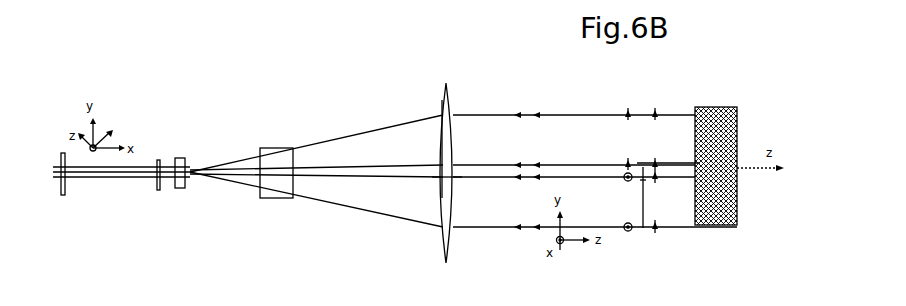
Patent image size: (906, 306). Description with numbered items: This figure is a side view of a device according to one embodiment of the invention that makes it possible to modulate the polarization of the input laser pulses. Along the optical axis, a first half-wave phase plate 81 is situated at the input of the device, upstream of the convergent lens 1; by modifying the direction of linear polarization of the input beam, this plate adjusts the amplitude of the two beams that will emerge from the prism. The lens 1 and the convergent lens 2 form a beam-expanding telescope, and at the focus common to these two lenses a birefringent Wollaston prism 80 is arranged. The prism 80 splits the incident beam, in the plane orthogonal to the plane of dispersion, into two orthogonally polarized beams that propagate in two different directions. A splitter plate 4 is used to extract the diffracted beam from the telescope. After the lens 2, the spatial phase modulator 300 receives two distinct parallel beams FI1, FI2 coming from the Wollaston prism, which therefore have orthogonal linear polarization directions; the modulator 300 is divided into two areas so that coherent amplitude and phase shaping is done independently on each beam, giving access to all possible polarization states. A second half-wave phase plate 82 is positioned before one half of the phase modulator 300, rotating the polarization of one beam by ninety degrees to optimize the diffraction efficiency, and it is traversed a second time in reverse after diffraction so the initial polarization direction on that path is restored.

The convergent lens 1 is at (158, 192).
The convergent lens 2 is at (440, 93).
The splitter plate 4 is at (272, 147).
The birefringent component (Wollaston prism) 80 is at (180, 157).
The first half-wave phase plate 81 is at (63, 197).
The second half-wave phase plate 82 is at (643, 229).
The spatial phase modulator 300 is at (712, 106).
The first parallel beam FI1 is at (512, 113).
The second parallel beam FI2 is at (512, 230).